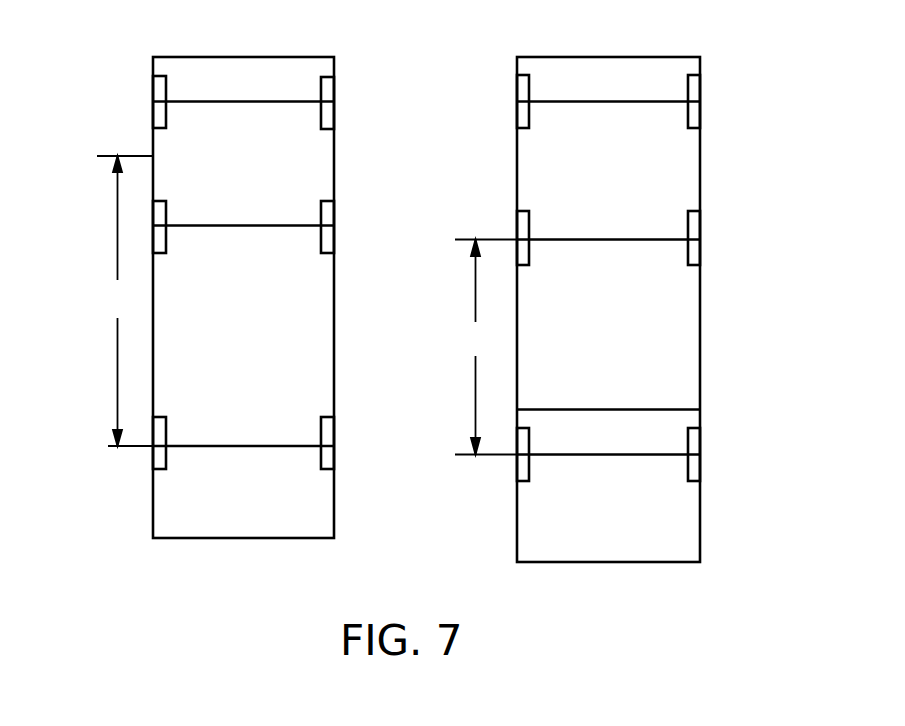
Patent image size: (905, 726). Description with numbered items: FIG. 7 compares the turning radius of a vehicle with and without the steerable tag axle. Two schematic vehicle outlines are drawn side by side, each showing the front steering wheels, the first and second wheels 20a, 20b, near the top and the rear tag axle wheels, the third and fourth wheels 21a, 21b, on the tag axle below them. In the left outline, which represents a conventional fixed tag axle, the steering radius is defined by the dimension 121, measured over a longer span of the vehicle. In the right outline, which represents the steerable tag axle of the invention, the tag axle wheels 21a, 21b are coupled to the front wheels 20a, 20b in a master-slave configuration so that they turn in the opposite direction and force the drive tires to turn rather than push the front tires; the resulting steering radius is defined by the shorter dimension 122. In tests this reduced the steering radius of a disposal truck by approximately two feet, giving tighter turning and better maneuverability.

The third wheel on the tag axle 21a is at (157, 86).
The fourth wheel on the tag axle 21b is at (330, 89).
The first wheel 20a is at (162, 422).
The second wheel 20b is at (332, 425).
The steering radius with conventional tag axle 121 is at (125, 301).
The steering radius with steerable tag axle 122 is at (485, 347).